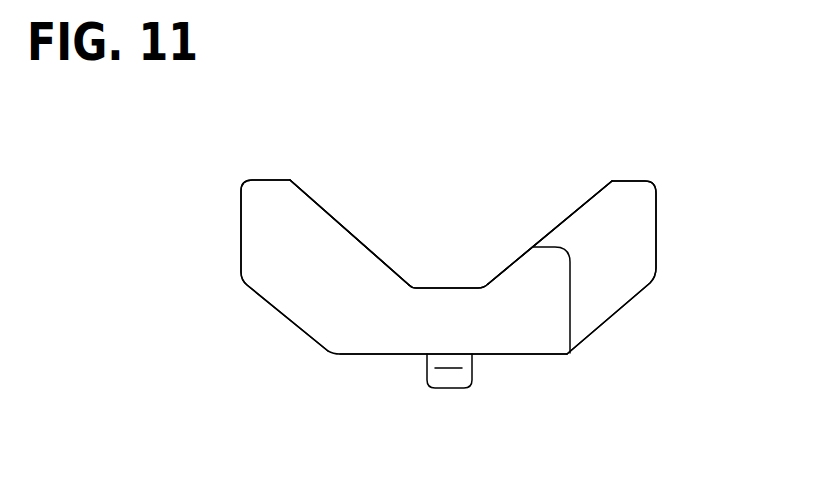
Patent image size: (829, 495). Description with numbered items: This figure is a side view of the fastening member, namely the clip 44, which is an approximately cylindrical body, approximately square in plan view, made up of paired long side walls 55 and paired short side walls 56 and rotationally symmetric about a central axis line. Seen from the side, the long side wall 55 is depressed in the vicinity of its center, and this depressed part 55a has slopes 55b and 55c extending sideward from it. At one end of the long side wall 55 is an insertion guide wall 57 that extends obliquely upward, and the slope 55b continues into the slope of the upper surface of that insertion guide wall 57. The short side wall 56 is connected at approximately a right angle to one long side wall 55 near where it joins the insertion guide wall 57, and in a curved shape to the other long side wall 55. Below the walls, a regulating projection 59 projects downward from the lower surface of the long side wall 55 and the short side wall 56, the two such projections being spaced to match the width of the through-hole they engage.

The clip 44 is at (640, 154).
The long side wall 55 is at (465, 320).
The depressed part 55a is at (440, 287).
The slope 55b is at (380, 253).
The slope 55c is at (507, 261).
The short side wall 56 is at (571, 291).
The insertion guide wall 57 is at (270, 269).
The regulating projection 59 is at (448, 380).